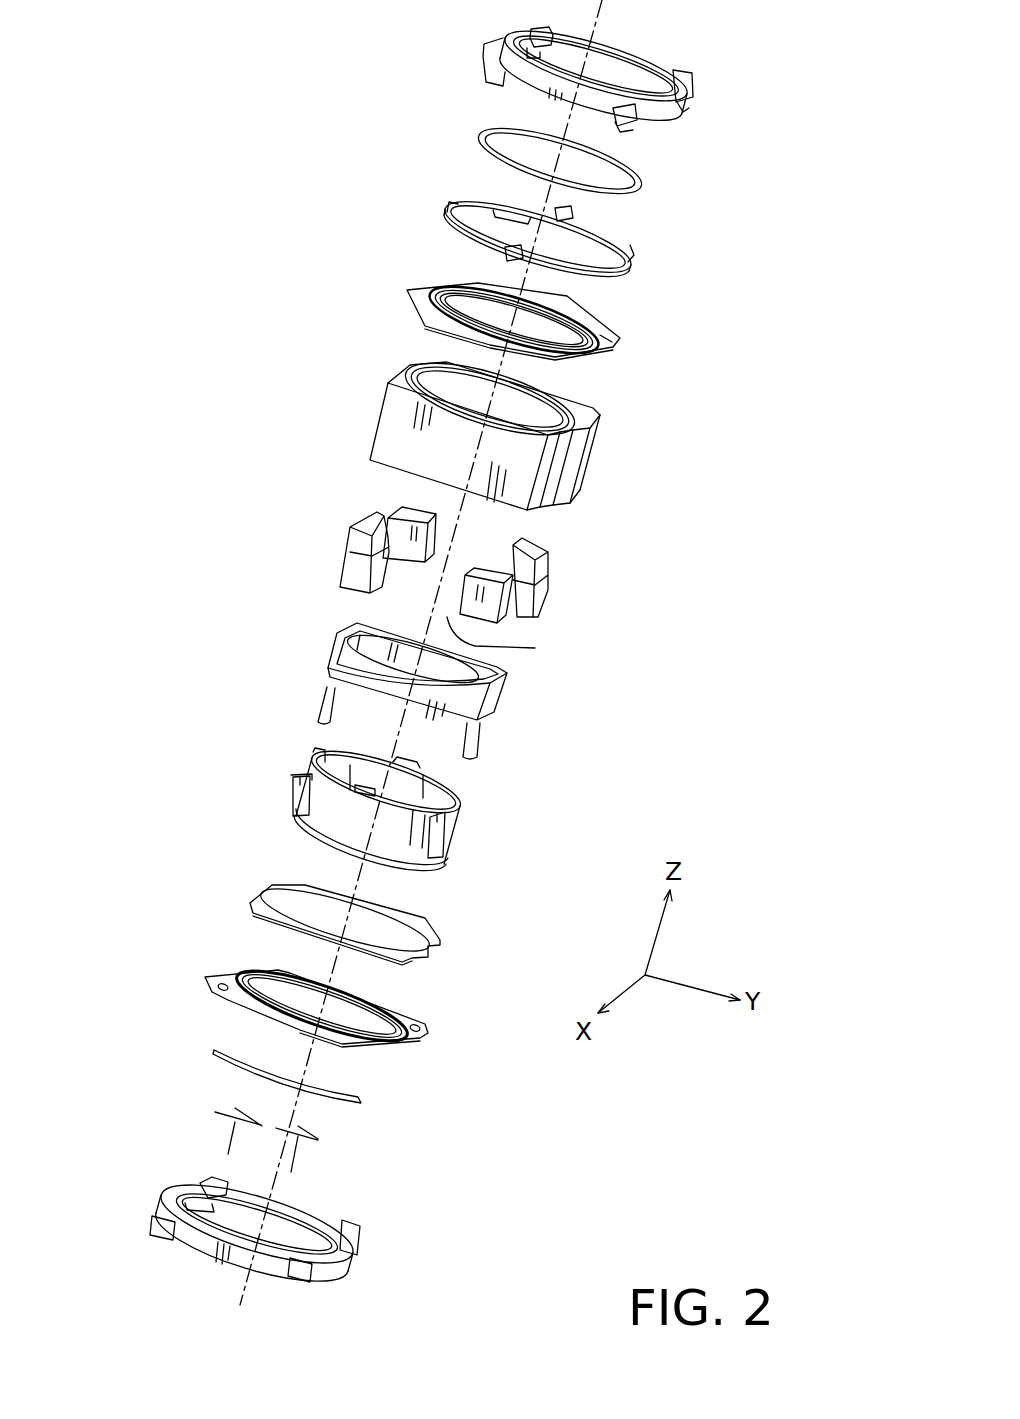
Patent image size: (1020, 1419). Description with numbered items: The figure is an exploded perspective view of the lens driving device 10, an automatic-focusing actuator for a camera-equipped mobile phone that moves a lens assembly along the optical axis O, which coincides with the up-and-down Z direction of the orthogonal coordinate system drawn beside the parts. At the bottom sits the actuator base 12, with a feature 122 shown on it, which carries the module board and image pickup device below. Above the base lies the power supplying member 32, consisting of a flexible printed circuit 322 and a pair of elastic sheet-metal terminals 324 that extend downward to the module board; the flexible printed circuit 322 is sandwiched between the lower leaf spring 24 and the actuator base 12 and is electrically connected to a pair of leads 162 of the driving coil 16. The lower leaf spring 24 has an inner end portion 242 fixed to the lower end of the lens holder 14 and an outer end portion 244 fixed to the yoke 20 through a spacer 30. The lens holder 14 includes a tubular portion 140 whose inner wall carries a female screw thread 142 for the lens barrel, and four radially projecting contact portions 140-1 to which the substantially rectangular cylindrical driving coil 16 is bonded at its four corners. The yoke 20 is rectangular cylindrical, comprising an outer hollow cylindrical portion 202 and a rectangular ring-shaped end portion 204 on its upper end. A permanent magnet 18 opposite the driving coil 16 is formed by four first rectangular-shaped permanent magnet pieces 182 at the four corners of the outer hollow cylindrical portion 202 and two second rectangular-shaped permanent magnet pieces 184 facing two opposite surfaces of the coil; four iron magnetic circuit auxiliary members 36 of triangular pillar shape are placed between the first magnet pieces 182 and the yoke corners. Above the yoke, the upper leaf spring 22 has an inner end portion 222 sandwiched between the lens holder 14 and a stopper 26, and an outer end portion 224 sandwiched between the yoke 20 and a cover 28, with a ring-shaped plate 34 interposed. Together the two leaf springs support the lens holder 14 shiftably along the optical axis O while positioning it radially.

The lens driving device 10 is at (352, 146).
The optical axis O is at (596, 8).
The cover 28 is at (490, 70).
The stopper 26 is at (643, 178).
The ring-shaped plate 34 is at (618, 242).
The upper leaf spring 22 is at (525, 320).
The inner end portion 222 is at (412, 303).
The outer end portion 224 is at (620, 347).
The yoke 20 is at (493, 429).
The rectangular ring-shaped end portion 204 is at (578, 390).
The outer hollow cylindrical portion 202 is at (392, 430).
The permanent magnet 18 is at (474, 568).
The first rectangular-shaped permanent magnet pieces 182 is at (405, 502).
The second rectangular-shaped permanent magnet pieces 184 is at (355, 520).
The magnetic circuit auxiliary members 36 is at (410, 500).
The driving coil 16 is at (405, 691).
The leads 162 is at (325, 690).
The lens holder 14 is at (380, 812).
The female screw thread 142 is at (430, 775).
The tubular portion 140 is at (380, 830).
The contact portions 140-1 is at (518, 810).
The spacer 30 is at (437, 920).
The lower leaf spring 24 is at (322, 1007).
The inner end portion 242 is at (235, 1000).
The outer end portion 244 is at (430, 1038).
The power supplying member 32 is at (288, 1127).
The flexible printed circuit 322 is at (212, 1057).
The sheet-metal terminals 324 is at (222, 1137).
The actuator base 12 is at (262, 1225).
The protrusion of base 122 is at (185, 1250).